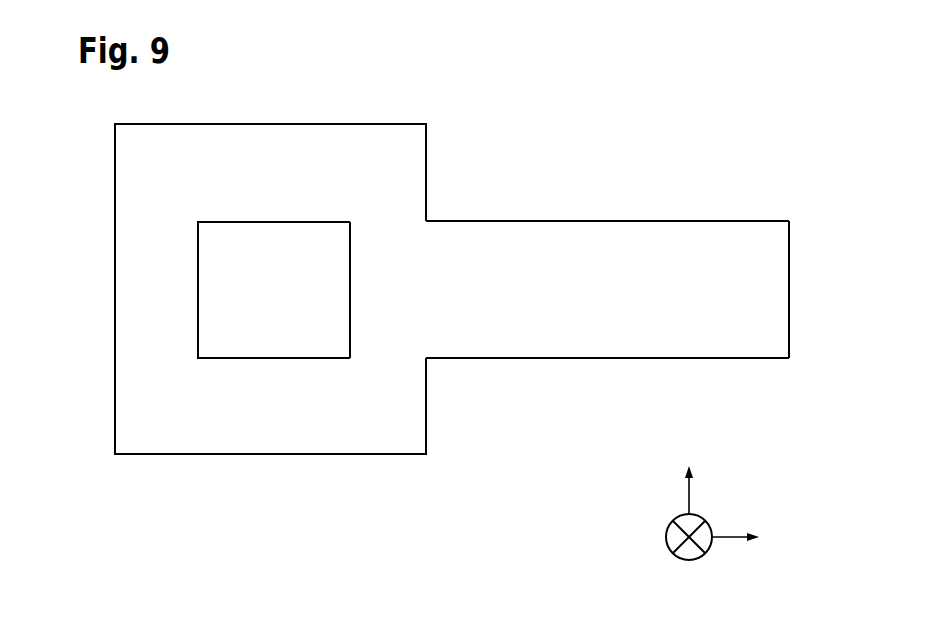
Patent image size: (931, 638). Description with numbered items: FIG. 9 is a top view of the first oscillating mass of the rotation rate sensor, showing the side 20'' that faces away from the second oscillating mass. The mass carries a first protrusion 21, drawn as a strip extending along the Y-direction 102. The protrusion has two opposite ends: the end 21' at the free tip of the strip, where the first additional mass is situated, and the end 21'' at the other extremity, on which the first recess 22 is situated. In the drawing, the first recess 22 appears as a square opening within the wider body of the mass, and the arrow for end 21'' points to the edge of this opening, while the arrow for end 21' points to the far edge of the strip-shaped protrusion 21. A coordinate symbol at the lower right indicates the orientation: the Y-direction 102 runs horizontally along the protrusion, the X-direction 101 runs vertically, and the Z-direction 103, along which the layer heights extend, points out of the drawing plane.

The side facing away from side 20' 20'' is at (352, 289).
The first protrusion 21 is at (607, 251).
The end of first protrusion 21' is at (808, 251).
The end of first protrusion 21'' is at (307, 370).
The first recess 22 is at (295, 250).
The X-direction 101 is at (664, 483).
The Y-direction 102 is at (751, 556).
The Z-direction 103 is at (676, 545).